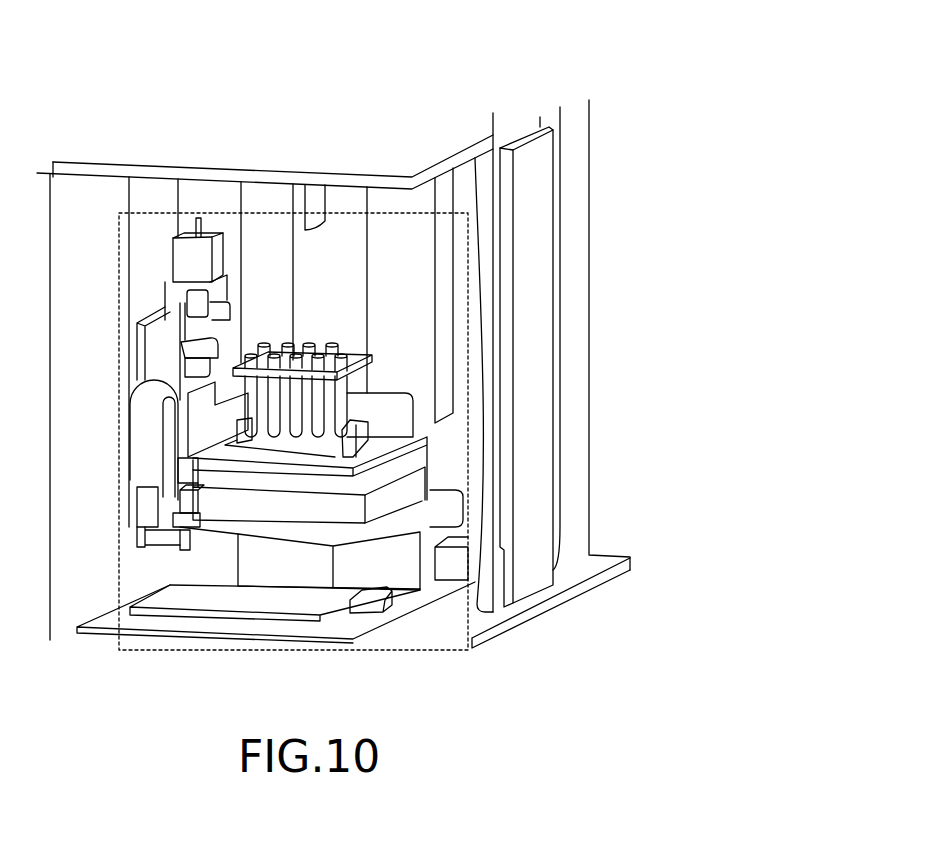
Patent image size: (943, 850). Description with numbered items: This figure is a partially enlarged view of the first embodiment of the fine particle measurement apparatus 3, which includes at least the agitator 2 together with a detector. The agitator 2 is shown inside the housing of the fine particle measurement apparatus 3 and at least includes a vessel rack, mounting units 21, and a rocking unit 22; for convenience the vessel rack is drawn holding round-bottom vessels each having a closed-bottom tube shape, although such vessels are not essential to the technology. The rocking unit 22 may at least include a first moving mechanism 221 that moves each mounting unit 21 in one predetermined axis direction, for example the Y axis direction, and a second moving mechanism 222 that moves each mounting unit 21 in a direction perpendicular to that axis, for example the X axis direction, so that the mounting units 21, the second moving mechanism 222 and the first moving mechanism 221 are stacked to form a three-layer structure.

The agitator 2 is at (389, 210).
The fine particle measurement apparatus 3 is at (558, 79).
The mounting unit 21 is at (188, 460).
The rocking unit 22 is at (430, 512).
The first moving mechanism 221 is at (188, 495).
The second moving mechanism 222 is at (380, 438).